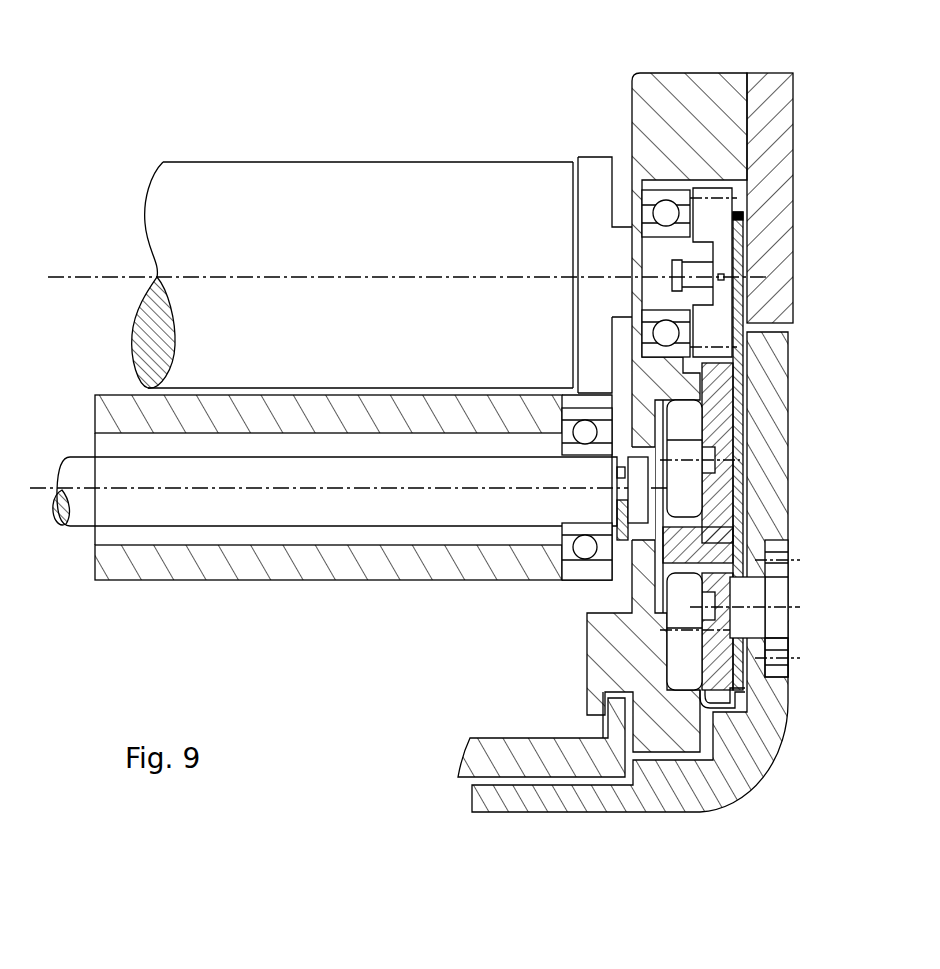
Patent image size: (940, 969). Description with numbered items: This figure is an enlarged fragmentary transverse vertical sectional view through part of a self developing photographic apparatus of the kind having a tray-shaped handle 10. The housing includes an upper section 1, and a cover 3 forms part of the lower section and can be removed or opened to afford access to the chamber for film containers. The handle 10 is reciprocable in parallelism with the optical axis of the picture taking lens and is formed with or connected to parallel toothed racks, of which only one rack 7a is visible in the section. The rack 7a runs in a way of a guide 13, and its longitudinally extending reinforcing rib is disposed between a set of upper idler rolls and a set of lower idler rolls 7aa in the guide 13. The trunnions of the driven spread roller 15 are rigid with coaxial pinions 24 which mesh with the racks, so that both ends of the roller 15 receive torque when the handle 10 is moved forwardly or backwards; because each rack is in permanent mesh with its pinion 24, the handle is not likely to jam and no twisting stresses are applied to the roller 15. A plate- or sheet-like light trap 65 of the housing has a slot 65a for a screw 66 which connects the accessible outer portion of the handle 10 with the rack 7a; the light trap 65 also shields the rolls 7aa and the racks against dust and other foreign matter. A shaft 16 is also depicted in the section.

The upper section 1 is at (787, 137).
The cover 3 is at (480, 745).
The toothed rack 7a is at (715, 400).
The lower idler rolls 7aa is at (683, 505).
The tray-shaped handle 10 is at (778, 440).
The guide 13 is at (717, 90).
The driven spread roller 15 is at (375, 187).
The shaft 16 is at (287, 562).
The pinion 24 is at (705, 221).
The light trap 65 is at (743, 535).
The slot 65a is at (770, 652).
The screw 66 is at (777, 592).